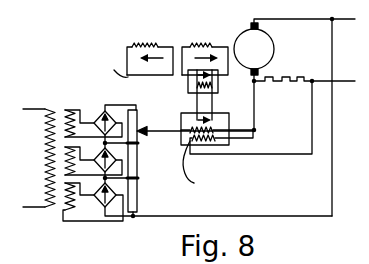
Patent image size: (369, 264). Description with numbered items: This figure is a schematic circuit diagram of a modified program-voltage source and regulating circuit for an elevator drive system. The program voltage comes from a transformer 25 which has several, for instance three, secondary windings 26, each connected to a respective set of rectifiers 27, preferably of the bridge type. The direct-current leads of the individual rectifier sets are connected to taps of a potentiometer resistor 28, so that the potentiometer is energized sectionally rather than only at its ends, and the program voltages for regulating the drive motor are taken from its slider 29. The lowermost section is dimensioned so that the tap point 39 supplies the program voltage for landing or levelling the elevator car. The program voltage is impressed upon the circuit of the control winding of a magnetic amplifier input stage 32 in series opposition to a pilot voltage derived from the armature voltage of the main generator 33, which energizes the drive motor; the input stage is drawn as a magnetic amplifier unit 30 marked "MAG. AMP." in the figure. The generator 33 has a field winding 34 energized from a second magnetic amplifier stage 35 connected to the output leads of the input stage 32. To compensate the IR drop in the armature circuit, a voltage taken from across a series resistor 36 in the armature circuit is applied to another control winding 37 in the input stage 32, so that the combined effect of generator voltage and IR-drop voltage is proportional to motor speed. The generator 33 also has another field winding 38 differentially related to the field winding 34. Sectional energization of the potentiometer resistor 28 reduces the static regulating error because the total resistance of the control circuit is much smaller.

The transformer 25 is at (70, 244).
The secondary windings 26 is at (74, 109).
The rectifiers 27 is at (100, 113).
The potentiometer resistor 28 is at (137, 202).
The slider 29 is at (145, 127).
The magnetic amplifier 30 is at (214, 130).
The magnetic amplifier input stage 32 is at (181, 139).
The main generator 33 is at (268, 41).
The field winding 34 is at (213, 32).
The second magnetic amplifier stage 35 is at (188, 89).
The series resistor 36 is at (283, 72).
The control winding 37 is at (213, 141).
The field winding 38 is at (161, 32).
The tap point 39 is at (137, 178).